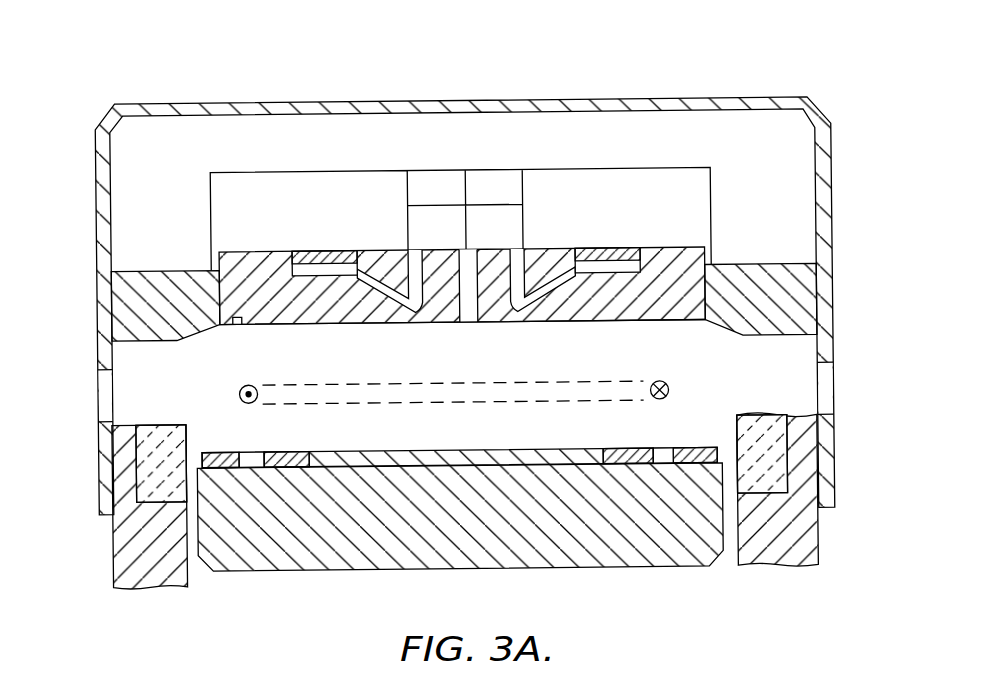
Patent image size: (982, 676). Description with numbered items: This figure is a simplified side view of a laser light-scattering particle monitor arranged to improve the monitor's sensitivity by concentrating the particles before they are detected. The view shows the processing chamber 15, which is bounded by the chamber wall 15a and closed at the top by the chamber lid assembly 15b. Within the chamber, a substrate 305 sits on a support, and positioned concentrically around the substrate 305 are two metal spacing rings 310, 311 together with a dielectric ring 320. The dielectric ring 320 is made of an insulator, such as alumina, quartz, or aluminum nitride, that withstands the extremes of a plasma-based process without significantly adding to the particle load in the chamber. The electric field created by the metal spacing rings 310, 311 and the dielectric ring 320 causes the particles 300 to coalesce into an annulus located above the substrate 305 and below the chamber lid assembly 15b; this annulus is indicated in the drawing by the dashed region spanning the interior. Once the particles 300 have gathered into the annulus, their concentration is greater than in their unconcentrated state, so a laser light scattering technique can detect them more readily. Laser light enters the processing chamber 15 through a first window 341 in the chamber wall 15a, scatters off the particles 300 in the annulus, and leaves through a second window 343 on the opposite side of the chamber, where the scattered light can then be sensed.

The processing chamber 15 is at (464, 266).
The chamber wall 15a is at (98, 500).
The chamber lid assembly 15b is at (588, 99).
The particles 300 is at (669, 393).
The substrate 305 is at (460, 463).
The metal spacing ring 310 is at (296, 469).
The metal spacing ring 311 is at (207, 470).
The dielectric ring 320 is at (250, 470).
The first window 341 is at (835, 386).
The second window 343 is at (99, 394).